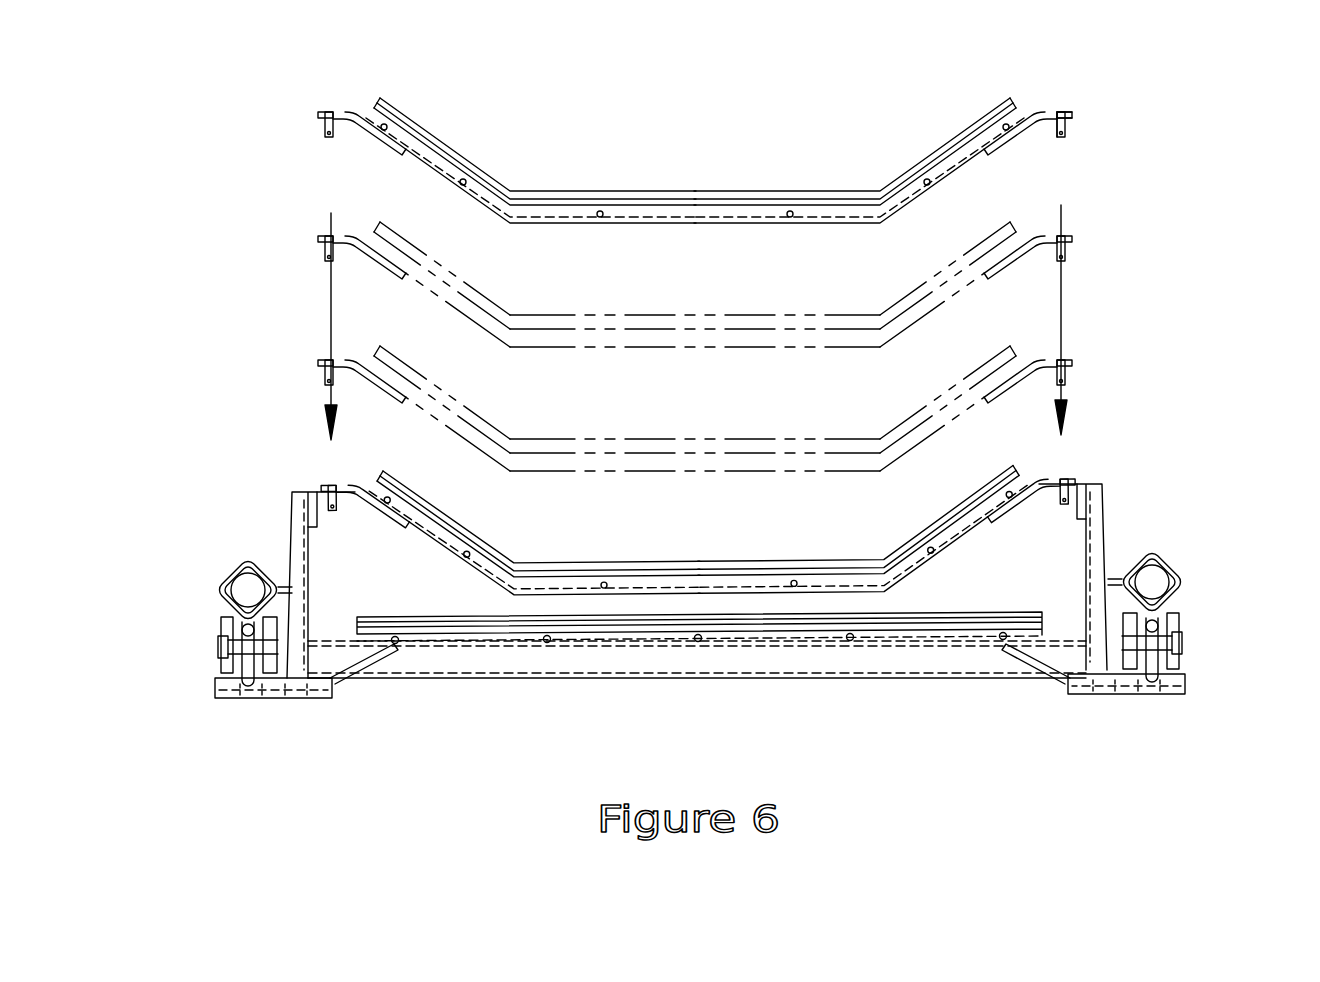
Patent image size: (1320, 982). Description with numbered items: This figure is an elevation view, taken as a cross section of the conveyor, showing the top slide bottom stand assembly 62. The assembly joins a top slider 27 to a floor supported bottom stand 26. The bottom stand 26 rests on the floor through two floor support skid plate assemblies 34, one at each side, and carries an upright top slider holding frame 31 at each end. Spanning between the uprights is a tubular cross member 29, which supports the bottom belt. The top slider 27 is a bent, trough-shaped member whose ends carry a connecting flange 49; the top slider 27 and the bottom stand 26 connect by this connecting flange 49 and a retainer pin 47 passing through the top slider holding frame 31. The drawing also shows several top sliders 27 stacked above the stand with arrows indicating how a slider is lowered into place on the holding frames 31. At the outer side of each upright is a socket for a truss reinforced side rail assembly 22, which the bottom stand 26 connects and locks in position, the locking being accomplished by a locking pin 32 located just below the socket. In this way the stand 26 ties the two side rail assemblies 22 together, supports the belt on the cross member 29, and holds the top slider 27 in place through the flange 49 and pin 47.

The truss reinforced side rail assembly 22 is at (240, 565).
The floor supported bottom stand 26 is at (800, 707).
The top slider 27 is at (688, 165).
The tubular cross member 29 is at (700, 678).
The top slider holding frame 31 is at (316, 482).
The locking pin 32 is at (215, 648).
The floor support skid plate assembly 34 is at (282, 700).
The retainer pin 47 is at (1065, 130).
The connecting flange 49 is at (1072, 105).
The top slide bottom stand assembly 62 is at (1152, 332).